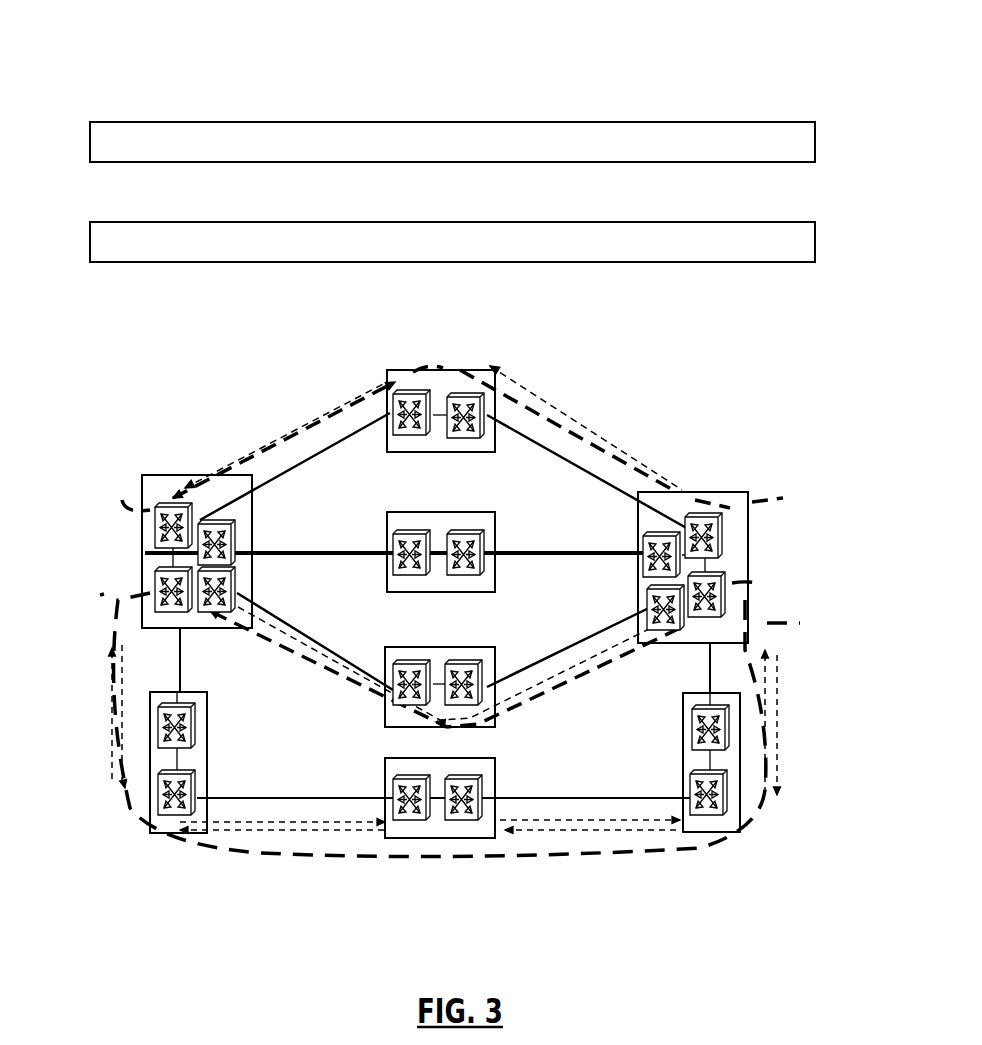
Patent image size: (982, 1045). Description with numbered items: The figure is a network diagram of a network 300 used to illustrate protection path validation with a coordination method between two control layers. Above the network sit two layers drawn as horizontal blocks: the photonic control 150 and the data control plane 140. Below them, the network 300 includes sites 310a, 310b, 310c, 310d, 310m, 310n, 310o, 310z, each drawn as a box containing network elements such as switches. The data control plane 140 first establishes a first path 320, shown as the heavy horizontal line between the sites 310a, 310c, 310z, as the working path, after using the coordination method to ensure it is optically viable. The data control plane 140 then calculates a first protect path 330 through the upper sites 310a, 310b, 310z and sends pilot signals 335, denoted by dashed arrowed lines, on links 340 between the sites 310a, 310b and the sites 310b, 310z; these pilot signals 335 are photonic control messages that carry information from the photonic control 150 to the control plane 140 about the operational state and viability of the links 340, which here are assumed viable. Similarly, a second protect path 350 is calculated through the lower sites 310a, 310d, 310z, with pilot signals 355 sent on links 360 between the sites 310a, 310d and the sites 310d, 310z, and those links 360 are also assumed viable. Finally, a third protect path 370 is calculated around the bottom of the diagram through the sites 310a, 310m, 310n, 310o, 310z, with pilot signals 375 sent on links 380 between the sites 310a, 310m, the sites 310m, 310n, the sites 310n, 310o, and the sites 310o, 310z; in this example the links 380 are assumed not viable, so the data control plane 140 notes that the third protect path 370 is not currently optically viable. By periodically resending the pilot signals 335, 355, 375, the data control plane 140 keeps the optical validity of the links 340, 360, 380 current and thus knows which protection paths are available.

The network 300 is at (520, 58).
The photonic control 150 is at (588, 122).
The data control plane 140 is at (588, 222).
The site 310a is at (162, 475).
The site 310b is at (470, 370).
The site 310c is at (457, 512).
The site 310d is at (475, 647).
The site 310m is at (207, 750).
The site 310n is at (495, 770).
The site 310o is at (683, 715).
The site 310z is at (723, 492).
The first path 320 is at (288, 548).
The first protect path 330 is at (532, 398).
The pilot signals 335 is at (272, 478).
The links 340 is at (305, 408).
The second protect path 350 is at (303, 658).
The pilot signals 355 is at (342, 698).
The links 360 is at (328, 648).
The third protect path 370 is at (257, 853).
The pilot signals 375 is at (102, 715).
The links 380 is at (180, 688).